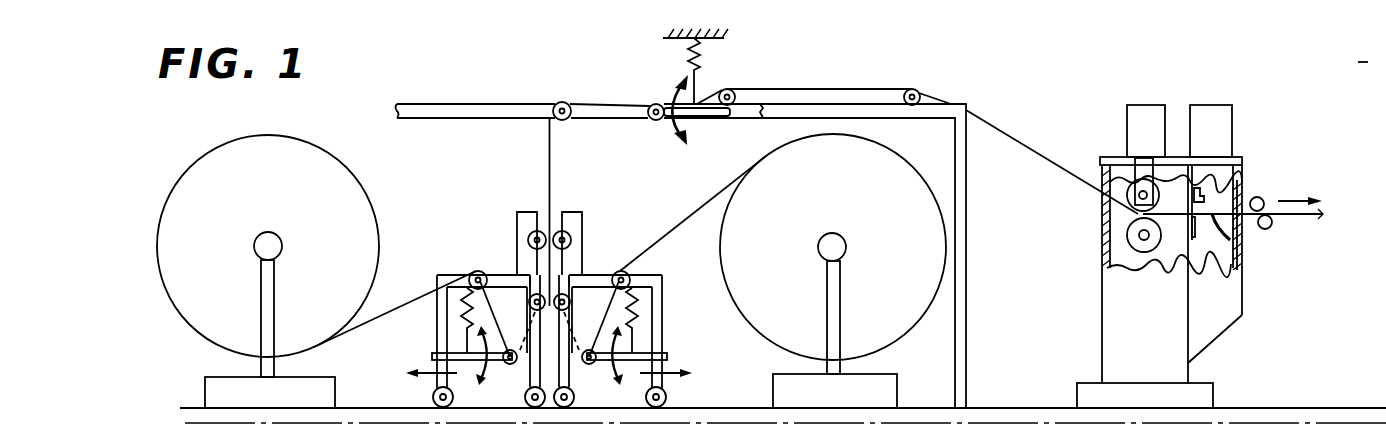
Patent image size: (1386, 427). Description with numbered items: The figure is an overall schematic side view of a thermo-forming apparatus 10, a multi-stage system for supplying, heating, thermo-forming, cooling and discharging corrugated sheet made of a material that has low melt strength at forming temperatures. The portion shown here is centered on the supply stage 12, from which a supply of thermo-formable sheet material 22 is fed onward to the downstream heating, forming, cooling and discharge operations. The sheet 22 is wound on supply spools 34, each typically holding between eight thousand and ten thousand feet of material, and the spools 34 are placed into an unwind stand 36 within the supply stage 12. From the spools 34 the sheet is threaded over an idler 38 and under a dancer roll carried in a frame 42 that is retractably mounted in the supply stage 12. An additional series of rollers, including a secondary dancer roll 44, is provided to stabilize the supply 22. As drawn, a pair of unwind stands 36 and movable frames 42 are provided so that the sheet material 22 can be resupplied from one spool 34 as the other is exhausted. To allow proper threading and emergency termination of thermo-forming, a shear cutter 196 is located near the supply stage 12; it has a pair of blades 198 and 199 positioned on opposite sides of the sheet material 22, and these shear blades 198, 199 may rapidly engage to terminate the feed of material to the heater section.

The thermo-forming apparatus 10 is at (1199, 237).
The supply stage 12 is at (500, 167).
The thermo-formable sheet material 22 is at (405, 290).
The supply spool 34 is at (380, 208).
The unwind stand 36 is at (842, 310).
The idler 38 is at (615, 268).
The frame 42 is at (663, 316).
The secondary dancer roll 44 is at (652, 104).
The shear cutter 196 is at (1240, 240).
The shear blade 198 is at (1178, 182).
The shear blade 199 is at (1175, 252).